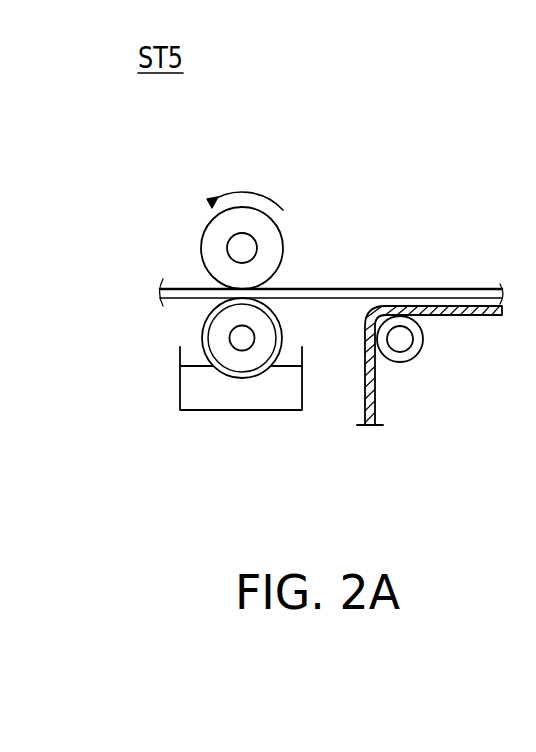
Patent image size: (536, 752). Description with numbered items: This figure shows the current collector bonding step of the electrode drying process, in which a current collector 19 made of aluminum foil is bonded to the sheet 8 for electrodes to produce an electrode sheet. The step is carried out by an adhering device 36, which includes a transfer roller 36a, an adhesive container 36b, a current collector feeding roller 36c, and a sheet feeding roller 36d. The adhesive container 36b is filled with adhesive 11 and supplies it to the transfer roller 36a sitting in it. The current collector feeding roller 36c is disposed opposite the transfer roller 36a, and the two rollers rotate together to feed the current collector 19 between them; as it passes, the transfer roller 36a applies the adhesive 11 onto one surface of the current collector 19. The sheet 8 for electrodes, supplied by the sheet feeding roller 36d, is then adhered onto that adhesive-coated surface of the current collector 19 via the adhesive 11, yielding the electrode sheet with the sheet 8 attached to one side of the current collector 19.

The adhering device 36 is at (308, 207).
The transfer roller 36a is at (203, 327).
The adhesive container 36b is at (302, 400).
The current collector feeding roller 36c is at (281, 255).
The sheet feeding roller 36d is at (417, 352).
The adhesive 11 is at (323, 300).
The current collector 19 is at (397, 288).
The sheet for electrodes 8 is at (376, 415).